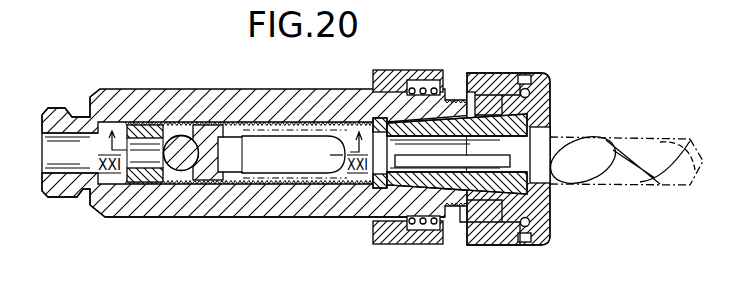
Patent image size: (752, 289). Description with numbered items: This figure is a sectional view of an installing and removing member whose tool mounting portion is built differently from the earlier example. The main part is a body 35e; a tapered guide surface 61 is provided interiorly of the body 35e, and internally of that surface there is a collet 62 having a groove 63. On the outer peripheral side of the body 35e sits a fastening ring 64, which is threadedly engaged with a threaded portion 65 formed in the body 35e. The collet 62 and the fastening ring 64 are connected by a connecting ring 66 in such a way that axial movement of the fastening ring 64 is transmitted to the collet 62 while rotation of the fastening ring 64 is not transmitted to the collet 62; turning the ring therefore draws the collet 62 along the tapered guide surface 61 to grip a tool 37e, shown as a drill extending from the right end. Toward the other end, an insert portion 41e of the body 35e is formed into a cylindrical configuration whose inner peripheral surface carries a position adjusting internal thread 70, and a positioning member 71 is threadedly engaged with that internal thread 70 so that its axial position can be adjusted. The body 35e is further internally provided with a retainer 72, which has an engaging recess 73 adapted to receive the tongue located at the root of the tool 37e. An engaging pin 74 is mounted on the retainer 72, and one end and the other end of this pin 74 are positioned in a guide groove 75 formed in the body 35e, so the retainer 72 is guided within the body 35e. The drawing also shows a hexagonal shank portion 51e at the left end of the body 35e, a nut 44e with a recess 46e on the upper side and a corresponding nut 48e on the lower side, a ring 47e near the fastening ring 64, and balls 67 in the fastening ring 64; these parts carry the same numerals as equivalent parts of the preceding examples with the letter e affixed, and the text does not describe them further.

The body 35e is at (291, 206).
The tool 37e is at (654, 186).
The insert portion 41e is at (186, 89).
The nut 44e is at (372, 74).
The nut recess with balls 46e is at (426, 70).
The lower ring 47e is at (452, 240).
The lower nut 48e is at (421, 236).
The hexagonal shank 51e is at (58, 107).
The tapered guide surface 61 is at (468, 92).
The collet 62 is at (550, 122).
The groove 63 is at (551, 195).
The fastening ring 64 is at (540, 73).
The threaded portion 65 is at (494, 74).
The connecting ring 66 is at (551, 102).
The ball 67 is at (551, 77).
The position adjusting internal thread 70 is at (252, 183).
The positioning member 71 is at (145, 133).
The retainer 72 is at (217, 127).
The engaging recess 73 is at (228, 146).
The engaging pin 74 is at (157, 218).
The guide groove 75 is at (308, 167).